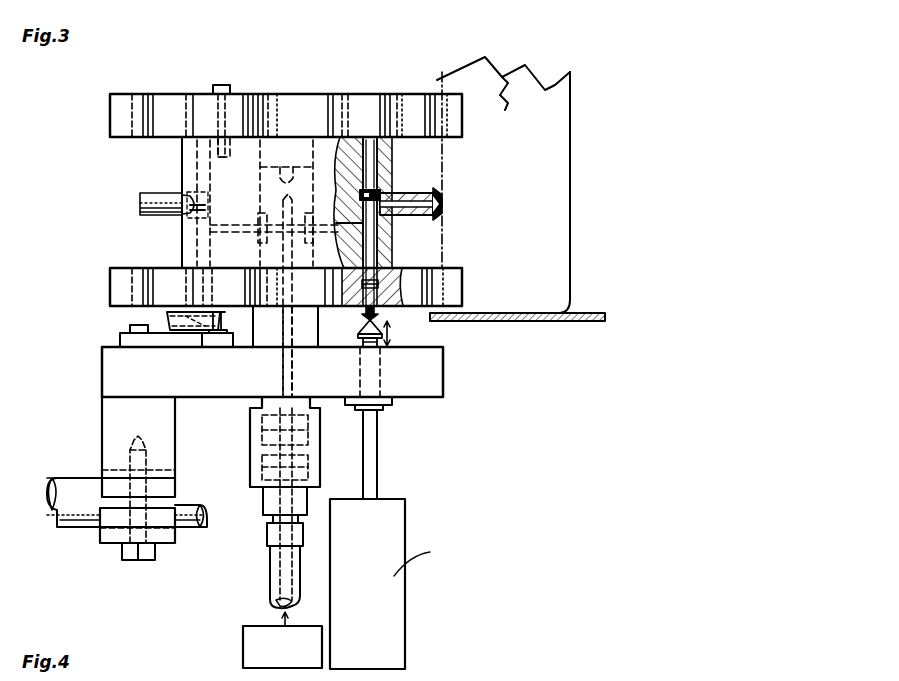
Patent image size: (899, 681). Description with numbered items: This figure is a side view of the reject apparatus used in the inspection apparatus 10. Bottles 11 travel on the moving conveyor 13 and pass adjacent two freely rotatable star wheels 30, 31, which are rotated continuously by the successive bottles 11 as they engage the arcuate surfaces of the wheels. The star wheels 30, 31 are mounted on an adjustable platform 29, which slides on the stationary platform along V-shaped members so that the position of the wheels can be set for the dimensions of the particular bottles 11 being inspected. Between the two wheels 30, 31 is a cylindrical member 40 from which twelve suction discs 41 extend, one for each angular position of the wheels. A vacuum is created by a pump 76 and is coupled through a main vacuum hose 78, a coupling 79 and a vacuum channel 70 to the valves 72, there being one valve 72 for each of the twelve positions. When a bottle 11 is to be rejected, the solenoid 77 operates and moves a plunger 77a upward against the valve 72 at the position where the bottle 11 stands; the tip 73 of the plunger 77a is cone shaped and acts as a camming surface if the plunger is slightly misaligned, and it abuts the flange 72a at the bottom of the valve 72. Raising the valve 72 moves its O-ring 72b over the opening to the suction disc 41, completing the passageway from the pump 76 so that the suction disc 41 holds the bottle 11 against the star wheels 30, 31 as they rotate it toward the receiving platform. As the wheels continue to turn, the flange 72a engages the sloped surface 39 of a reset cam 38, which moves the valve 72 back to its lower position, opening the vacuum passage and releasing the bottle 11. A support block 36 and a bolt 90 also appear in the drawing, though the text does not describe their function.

The inspection apparatus 10 is at (521, 393).
The bottle 11 is at (572, 101).
The moving conveyor 13 is at (600, 322).
The adjustable platform 29 is at (435, 370).
The star wheel 30 is at (124, 108).
The star wheel 31 is at (118, 286).
The support block 36 is at (155, 338).
The reset cam 38 is at (166, 318).
The sloped surface 39 is at (234, 316).
The cylindrical member 40 is at (181, 156).
The suction disc 41 is at (437, 190).
The vacuum channel 70 is at (281, 212).
The valve 72 is at (376, 254).
The flange 72a is at (362, 318).
The O-ring 72b is at (375, 192).
The tip 73 is at (358, 334).
The vacuum pump 76 is at (243, 630).
The solenoid 77 is at (394, 520).
The plunger 77a is at (378, 476).
The main vacuum hose 78 is at (270, 595).
The coupling 79 is at (250, 445).
The bolt 90 is at (224, 84).